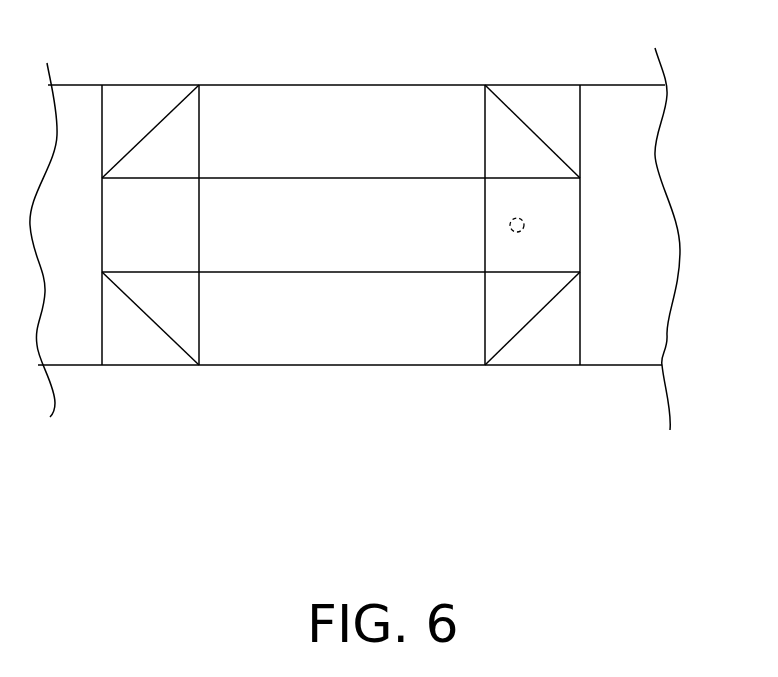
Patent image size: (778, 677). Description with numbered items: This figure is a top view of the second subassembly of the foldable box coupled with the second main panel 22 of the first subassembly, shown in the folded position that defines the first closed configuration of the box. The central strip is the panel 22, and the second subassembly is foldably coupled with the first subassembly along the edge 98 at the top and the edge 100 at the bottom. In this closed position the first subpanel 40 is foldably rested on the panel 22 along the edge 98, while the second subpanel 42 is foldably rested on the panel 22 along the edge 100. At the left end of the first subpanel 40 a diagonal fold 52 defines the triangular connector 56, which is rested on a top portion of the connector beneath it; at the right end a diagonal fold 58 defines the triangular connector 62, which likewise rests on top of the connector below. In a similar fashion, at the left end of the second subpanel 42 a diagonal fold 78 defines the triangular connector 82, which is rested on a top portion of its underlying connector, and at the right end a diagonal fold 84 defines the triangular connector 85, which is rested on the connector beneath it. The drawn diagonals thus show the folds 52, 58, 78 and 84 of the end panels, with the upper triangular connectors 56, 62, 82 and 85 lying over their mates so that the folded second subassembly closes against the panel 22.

The panel 22 is at (422, 215).
The first subpanel 40 is at (277, 128).
The second subpanel 42 is at (378, 330).
The diagonal fold 52 is at (148, 130).
The triangular connector 56 is at (188, 115).
The diagonal fold 58 is at (533, 130).
The triangular connector 62 is at (498, 112).
The diagonal fold 78 is at (152, 322).
The triangular connector 82 is at (172, 310).
The diagonal fold 84 is at (537, 318).
The triangular connector 85 is at (508, 310).
The edge 98 is at (345, 85).
The edge 100 is at (263, 365).